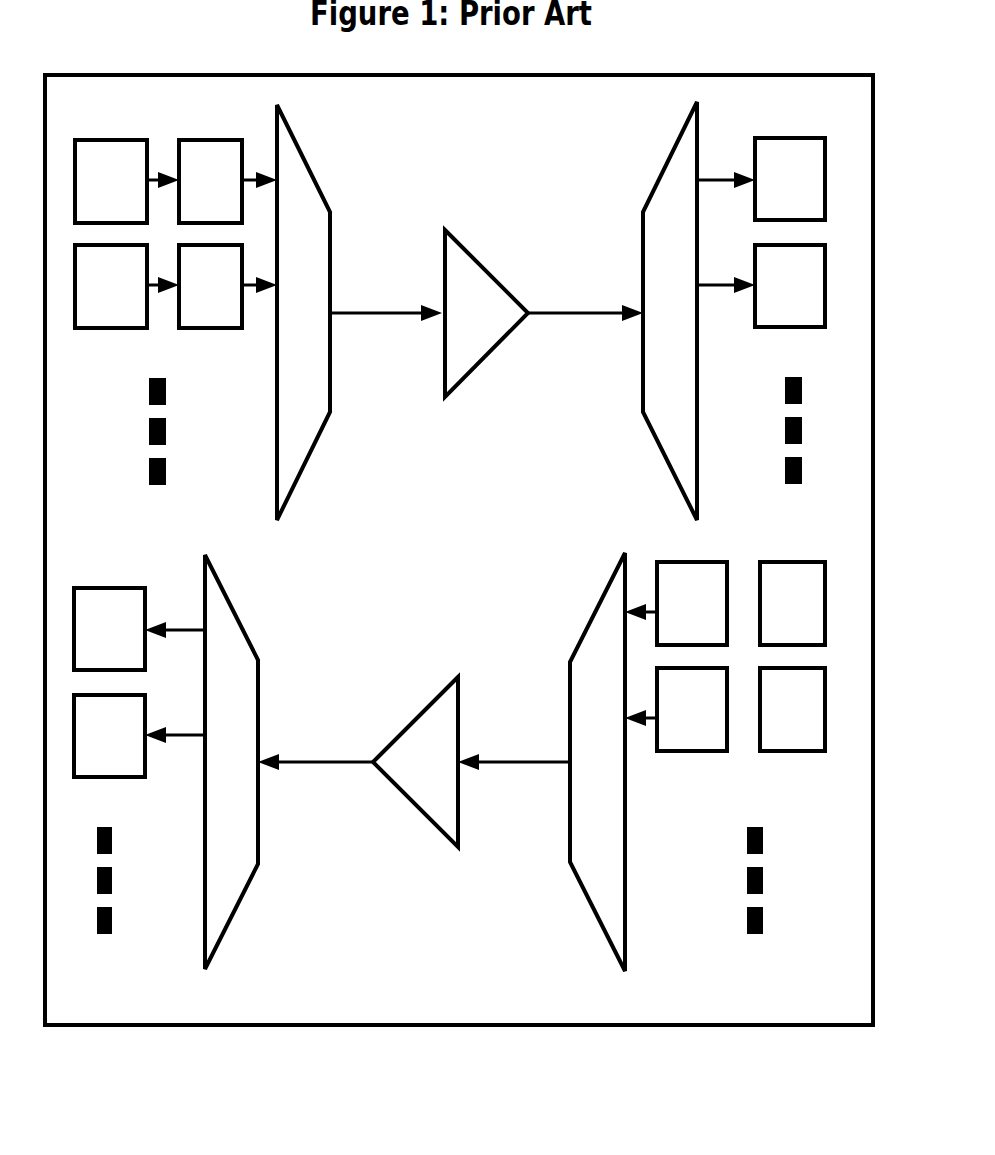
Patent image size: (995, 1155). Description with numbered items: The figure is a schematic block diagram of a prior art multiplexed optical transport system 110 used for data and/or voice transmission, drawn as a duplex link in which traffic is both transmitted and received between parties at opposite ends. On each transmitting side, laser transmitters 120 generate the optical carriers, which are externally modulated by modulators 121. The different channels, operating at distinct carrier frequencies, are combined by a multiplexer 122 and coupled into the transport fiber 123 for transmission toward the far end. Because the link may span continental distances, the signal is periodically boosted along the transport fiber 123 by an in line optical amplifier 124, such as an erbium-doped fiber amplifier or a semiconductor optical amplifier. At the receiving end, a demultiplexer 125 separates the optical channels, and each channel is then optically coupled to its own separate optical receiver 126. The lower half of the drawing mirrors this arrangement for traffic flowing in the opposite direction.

The optical transport system 110 is at (240, 1038).
The laser transmitter 120 is at (450, 445).
The modulator 121 is at (453, 445).
The multiplexer 122 is at (452, 538).
The transport fiber 123 is at (450, 559).
The in line optical amplifier 124 is at (450, 538).
The demultiplexer 125 is at (453, 535).
The optical receiver 126 is at (449, 457).